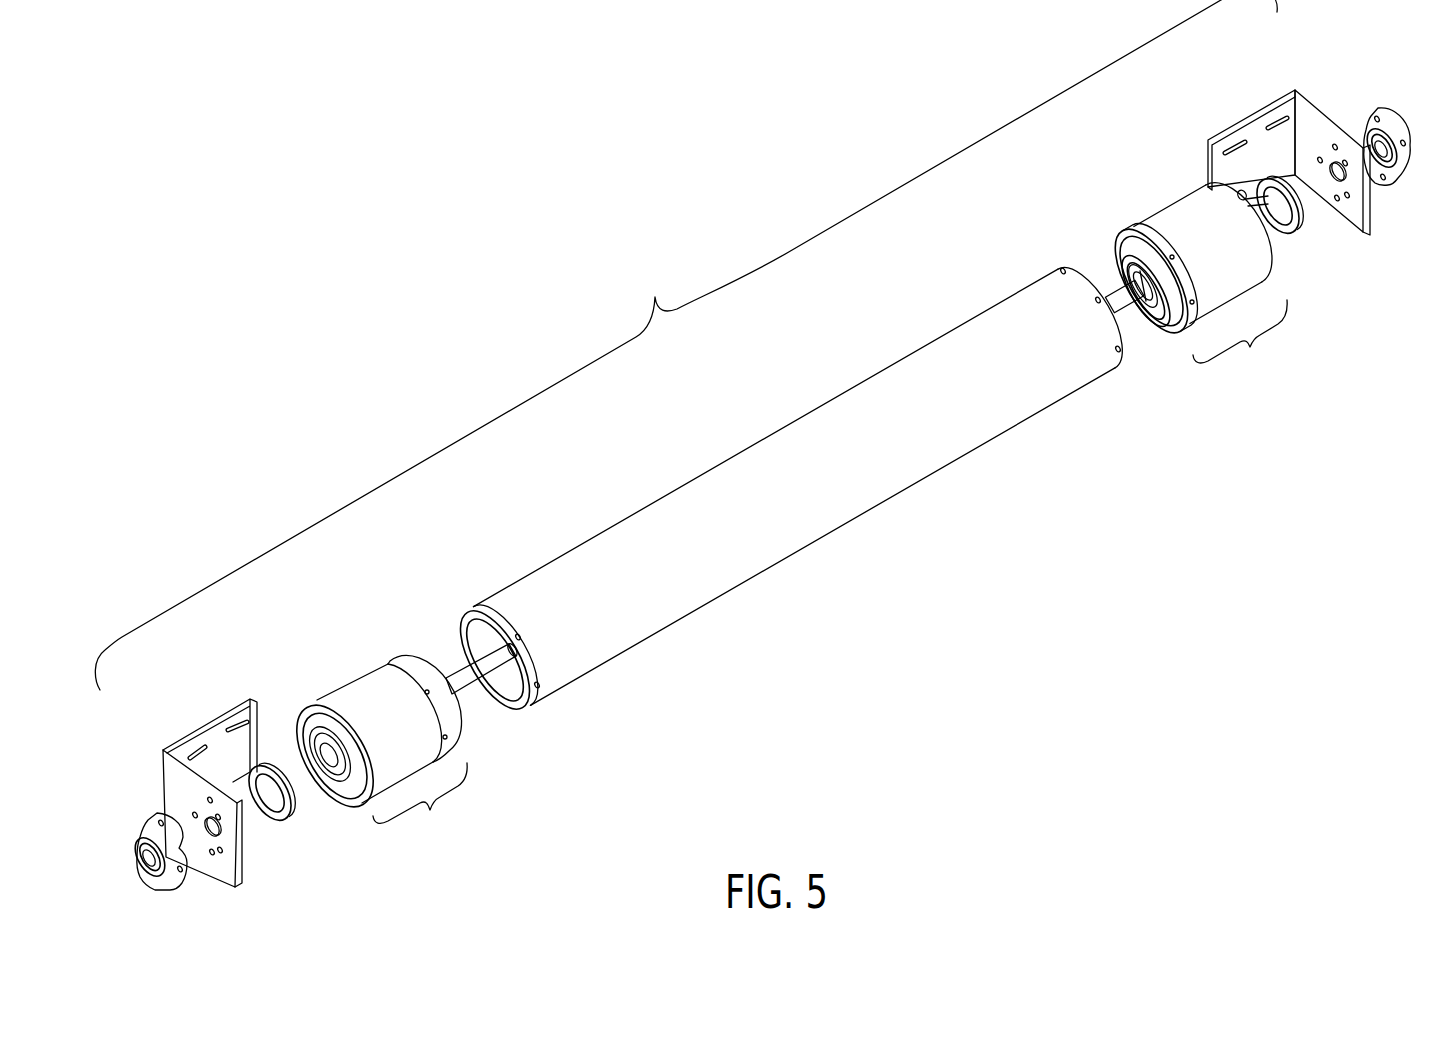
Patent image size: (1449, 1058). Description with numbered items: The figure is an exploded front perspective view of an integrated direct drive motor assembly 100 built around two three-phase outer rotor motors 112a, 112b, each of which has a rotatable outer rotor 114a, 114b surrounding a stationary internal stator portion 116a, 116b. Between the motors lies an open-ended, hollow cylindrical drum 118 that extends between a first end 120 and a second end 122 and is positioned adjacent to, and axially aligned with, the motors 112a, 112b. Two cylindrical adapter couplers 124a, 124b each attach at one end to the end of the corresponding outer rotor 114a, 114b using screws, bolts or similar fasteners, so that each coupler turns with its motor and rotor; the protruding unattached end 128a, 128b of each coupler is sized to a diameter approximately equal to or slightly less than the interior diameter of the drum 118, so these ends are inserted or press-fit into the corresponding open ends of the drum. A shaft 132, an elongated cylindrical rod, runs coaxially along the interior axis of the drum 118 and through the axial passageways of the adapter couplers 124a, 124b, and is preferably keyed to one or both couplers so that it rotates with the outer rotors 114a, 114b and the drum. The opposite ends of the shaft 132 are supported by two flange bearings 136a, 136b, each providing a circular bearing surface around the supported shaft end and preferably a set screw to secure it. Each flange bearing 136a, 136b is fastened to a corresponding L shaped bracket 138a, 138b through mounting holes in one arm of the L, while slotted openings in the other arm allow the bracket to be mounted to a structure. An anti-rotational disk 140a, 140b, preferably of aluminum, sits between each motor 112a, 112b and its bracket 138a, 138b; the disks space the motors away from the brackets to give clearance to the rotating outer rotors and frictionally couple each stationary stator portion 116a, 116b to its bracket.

The integrated direct drive motor assembly 100 is at (686, 345).
The hollow cylindrical drum 118 is at (760, 467).
The first end 120 is at (503, 617).
The second end 122 is at (1090, 340).
The shaft 132 is at (472, 677).
The outer rotor 114a is at (359, 689).
The outer rotor 114b is at (1145, 268).
The three-phase outer rotor motor 112a is at (368, 697).
The three-phase outer rotor motor 112b is at (1178, 213).
The stationary internal stator portion 116a is at (313, 707).
The stationary internal stator portion 116b is at (1157, 317).
The cylindrical adapter coupler 124a is at (420, 677).
The cylindrical adapter coupler 124b is at (1133, 237).
The protruding unattached end 128a is at (440, 670).
The protruding unattached end 128b is at (1112, 248).
The flange bearing 136a is at (157, 823).
The flange bearing 136b is at (1400, 130).
The L shaped bracket 138a is at (217, 740).
The L shaped bracket 138b is at (1257, 137).
The anti-rotational disk 140a is at (290, 810).
The anti-rotational disk 140b is at (1292, 232).